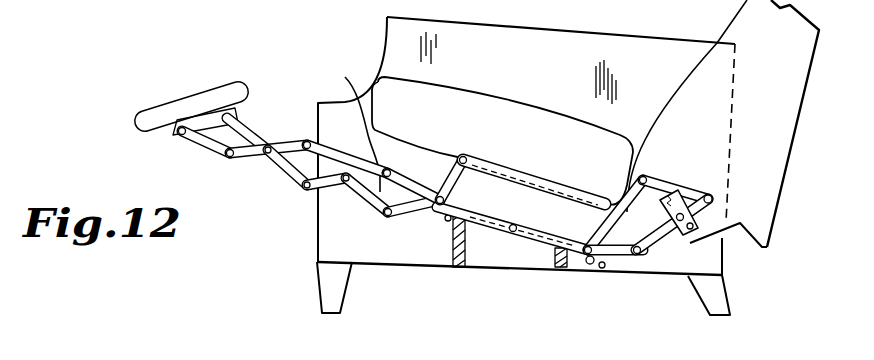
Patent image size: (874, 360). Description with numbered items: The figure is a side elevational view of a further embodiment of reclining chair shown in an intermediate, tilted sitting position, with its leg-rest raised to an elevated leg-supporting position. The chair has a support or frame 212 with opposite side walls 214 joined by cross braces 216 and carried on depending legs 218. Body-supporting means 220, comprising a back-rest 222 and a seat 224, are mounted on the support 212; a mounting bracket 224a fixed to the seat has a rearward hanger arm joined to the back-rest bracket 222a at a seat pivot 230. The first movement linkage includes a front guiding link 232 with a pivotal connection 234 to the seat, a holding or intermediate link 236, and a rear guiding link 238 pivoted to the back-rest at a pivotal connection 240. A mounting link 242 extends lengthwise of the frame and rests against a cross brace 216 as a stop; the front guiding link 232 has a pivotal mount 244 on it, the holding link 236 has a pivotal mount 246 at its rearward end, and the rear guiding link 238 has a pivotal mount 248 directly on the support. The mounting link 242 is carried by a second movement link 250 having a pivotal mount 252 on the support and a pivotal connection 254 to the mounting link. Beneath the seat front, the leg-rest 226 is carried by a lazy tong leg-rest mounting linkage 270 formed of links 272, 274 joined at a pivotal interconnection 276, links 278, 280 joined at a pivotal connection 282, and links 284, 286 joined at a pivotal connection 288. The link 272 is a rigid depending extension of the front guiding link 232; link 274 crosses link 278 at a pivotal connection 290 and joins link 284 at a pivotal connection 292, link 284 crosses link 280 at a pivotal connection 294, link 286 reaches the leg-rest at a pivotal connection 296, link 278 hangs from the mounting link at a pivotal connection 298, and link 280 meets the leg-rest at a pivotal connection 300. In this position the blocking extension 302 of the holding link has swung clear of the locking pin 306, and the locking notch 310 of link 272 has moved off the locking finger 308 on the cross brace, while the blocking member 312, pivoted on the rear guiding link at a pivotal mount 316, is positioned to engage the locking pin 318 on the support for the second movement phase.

The support or frame 212 is at (725, 262).
The side walls 214 is at (537, 21).
The cross braces 216 is at (315, 0).
The depending legs 218 is at (323, 290).
The body-supporting means 220 is at (772, 243).
The back-rest 222 is at (736, 33).
The mounting bracket or fixture 222a is at (660, 167).
The seat 224 is at (523, 116).
The mounting bracket 224a is at (520, 178).
The leg-rest 226 is at (170, 108).
The seat pivot 230 is at (638, 172).
The front guiding link 232 is at (462, 187).
The pivotal connection 234 is at (462, 157).
The holding or intermediate link 236 is at (613, 196).
The rear guiding link 238 is at (650, 248).
The pivotal connection 240 is at (714, 196).
The mounting link 242 is at (545, 270).
The pivotal mount 244 is at (440, 192).
The pivotal mount 246 is at (578, 190).
The pivotal mount 248 is at (672, 284).
The second movement link 250 is at (620, 262).
The pivotal mount 252 is at (668, 290).
The pivotal connection 254 is at (523, 252).
The leg-rest mounting linkage 270 is at (315, 230).
The link 272 is at (401, 216).
The link 274 is at (317, 162).
The pivotal interconnection 276 is at (387, 221).
The link 278 is at (353, 125).
The link 280 is at (282, 178).
The pivotal connection 282 is at (292, 182).
The link 284 is at (289, 148).
The link 286 is at (203, 160).
The pivotal connection 288 is at (238, 160).
The pivotal connection 290 is at (347, 182).
The pivotal connection 292 is at (306, 141).
The pivotal connection 294 is at (256, 125).
The pivotal connection 296 is at (182, 134).
The pivotal connection 298 is at (386, 162).
The pivotal connection 300 is at (225, 115).
The blocking extension 302 is at (572, 270).
The locking pin 306 is at (613, 280).
The locking finger or angle bracket 308 is at (465, 241).
The locking notch 310 is at (440, 208).
The blocking member 312 is at (693, 180).
The pivotal mount 316 is at (702, 222).
The locking pin 318 is at (725, 247).